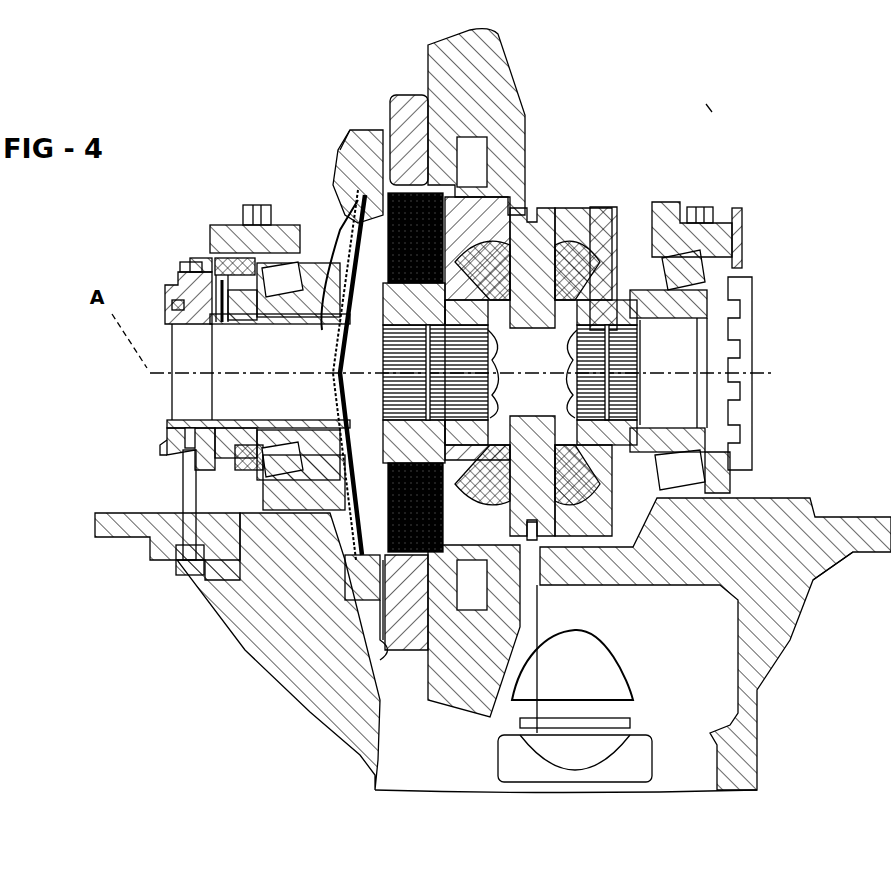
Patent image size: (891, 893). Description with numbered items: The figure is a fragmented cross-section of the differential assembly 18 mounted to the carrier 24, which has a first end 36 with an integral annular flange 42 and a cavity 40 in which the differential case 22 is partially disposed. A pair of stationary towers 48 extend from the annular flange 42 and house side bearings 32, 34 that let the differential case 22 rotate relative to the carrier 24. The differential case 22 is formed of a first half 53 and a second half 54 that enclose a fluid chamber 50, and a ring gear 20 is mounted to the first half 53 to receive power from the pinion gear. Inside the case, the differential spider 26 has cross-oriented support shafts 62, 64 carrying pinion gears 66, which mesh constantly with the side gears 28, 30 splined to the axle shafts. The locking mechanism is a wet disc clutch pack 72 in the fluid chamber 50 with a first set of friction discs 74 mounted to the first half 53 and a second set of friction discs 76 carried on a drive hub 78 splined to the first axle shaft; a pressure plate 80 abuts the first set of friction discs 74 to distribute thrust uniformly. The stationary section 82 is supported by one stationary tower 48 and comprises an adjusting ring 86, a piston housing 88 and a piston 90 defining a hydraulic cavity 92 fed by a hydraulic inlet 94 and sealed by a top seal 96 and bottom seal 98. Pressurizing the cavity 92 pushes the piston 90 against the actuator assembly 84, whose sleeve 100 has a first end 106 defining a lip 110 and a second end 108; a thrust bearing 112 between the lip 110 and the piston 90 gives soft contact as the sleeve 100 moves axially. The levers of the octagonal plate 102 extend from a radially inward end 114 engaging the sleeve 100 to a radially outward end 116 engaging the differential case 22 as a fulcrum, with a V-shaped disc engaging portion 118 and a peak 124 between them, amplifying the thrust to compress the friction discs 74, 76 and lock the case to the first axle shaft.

The differential assembly 18 is at (708, 110).
The ring gear 20 is at (498, 40).
The differential case 22 is at (378, 122).
The carrier 24 is at (765, 712).
The differential spider 26 is at (521, 360).
The side gear 28 is at (478, 313).
The side gear 30 is at (660, 272).
The side bearing 32 is at (245, 265).
The side bearing 34 is at (695, 265).
The first end 36 is at (815, 582).
The cavity 40 is at (283, 665).
The annular flange 42 is at (108, 513).
The stationary tower 48 is at (270, 225).
The fluid chamber 50 is at (378, 215).
The first half 53 is at (392, 95).
The second half 54 is at (342, 145).
The support shaft 62 is at (560, 208).
The support shaft 64 is at (515, 540).
The pinion gear 66 is at (582, 245).
The wet disc clutch pack 72 is at (383, 620).
The first set of friction discs 74 is at (398, 193).
The second set of friction discs 76 is at (402, 463).
The drive hub 78 is at (458, 250).
The pressure plate 80 is at (365, 600).
The stationary section 82 is at (165, 283).
The actuator assembly 84 is at (293, 418).
The adjusting ring 86 is at (200, 258).
The piston housing 88 is at (183, 264).
The piston 90 is at (190, 428).
The cavity 92 is at (168, 446).
The hydraulic inlet 94 is at (188, 575).
The top seal 96 is at (175, 427).
The bottom seal 98 is at (225, 258).
The sleeve 100 is at (256, 322).
The plate 102 is at (305, 480).
The first end 106 is at (228, 430).
The second end 108 is at (345, 323).
The lip 110 is at (224, 324).
The thrust bearing 112 is at (172, 318).
The radially inward end 114 is at (347, 420).
The radially outward end 116 is at (360, 565).
The disc engaging portion 118 is at (355, 198).
The peak 124 is at (352, 245).